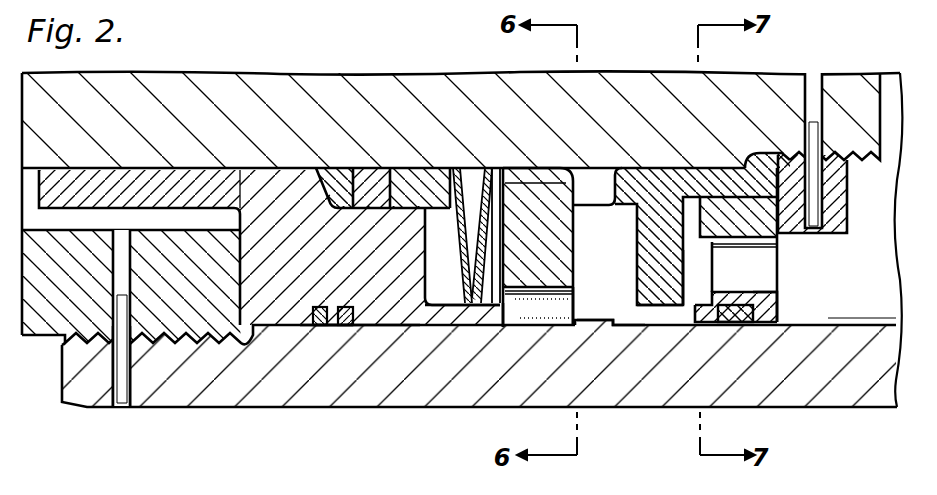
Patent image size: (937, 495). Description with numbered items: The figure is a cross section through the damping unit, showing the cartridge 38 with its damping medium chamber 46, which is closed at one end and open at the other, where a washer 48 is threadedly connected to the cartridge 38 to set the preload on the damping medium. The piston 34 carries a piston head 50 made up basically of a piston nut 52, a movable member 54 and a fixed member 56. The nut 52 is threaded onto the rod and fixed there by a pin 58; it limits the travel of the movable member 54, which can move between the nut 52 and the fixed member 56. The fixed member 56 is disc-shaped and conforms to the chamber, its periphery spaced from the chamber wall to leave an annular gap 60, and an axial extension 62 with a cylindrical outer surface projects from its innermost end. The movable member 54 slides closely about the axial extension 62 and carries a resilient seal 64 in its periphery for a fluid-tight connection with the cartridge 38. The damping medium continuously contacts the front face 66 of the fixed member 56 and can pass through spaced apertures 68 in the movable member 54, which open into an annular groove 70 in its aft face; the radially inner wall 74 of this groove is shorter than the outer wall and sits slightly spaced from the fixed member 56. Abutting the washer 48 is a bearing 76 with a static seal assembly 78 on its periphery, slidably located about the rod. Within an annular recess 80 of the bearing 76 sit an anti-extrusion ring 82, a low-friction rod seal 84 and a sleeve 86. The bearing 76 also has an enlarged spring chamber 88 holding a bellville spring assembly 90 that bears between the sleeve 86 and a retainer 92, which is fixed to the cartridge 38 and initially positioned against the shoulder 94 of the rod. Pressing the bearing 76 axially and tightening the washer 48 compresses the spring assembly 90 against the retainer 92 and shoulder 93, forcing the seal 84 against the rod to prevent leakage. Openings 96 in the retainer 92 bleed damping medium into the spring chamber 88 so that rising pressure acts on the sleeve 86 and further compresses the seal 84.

The piston 34 is at (181, 82).
The cartridge 38 is at (364, 385).
The damping medium chamber 46 is at (632, 323).
The washer 48 is at (55, 332).
The piston head 50 is at (821, 313).
The piston nut 52 is at (848, 193).
The movable member 54 is at (766, 311).
The fixed member 56 is at (648, 308).
The pin 58 is at (817, 116).
The annular gap 60 is at (681, 308).
The axial extension 62 is at (748, 165).
The seal 64 is at (748, 324).
The front face 66 is at (768, 324).
The apertures 68 is at (768, 272).
The annular groove 70 is at (712, 250).
The radially inner wall 74 is at (626, 172).
The bearing 76 is at (386, 330).
The static seal assembly 78 is at (323, 340).
The annular recess 80 is at (300, 330).
The anti-extrusion ring 82 is at (333, 192).
The rod seal 84 is at (356, 196).
The sleeve 86 is at (402, 196).
The spring chamber 88 is at (455, 330).
The bellville spring assembly 90 is at (478, 158).
The retainer 92 is at (503, 340).
The shoulder 93 is at (575, 328).
The shoulder 94 is at (583, 196).
The openings 96 is at (578, 298).